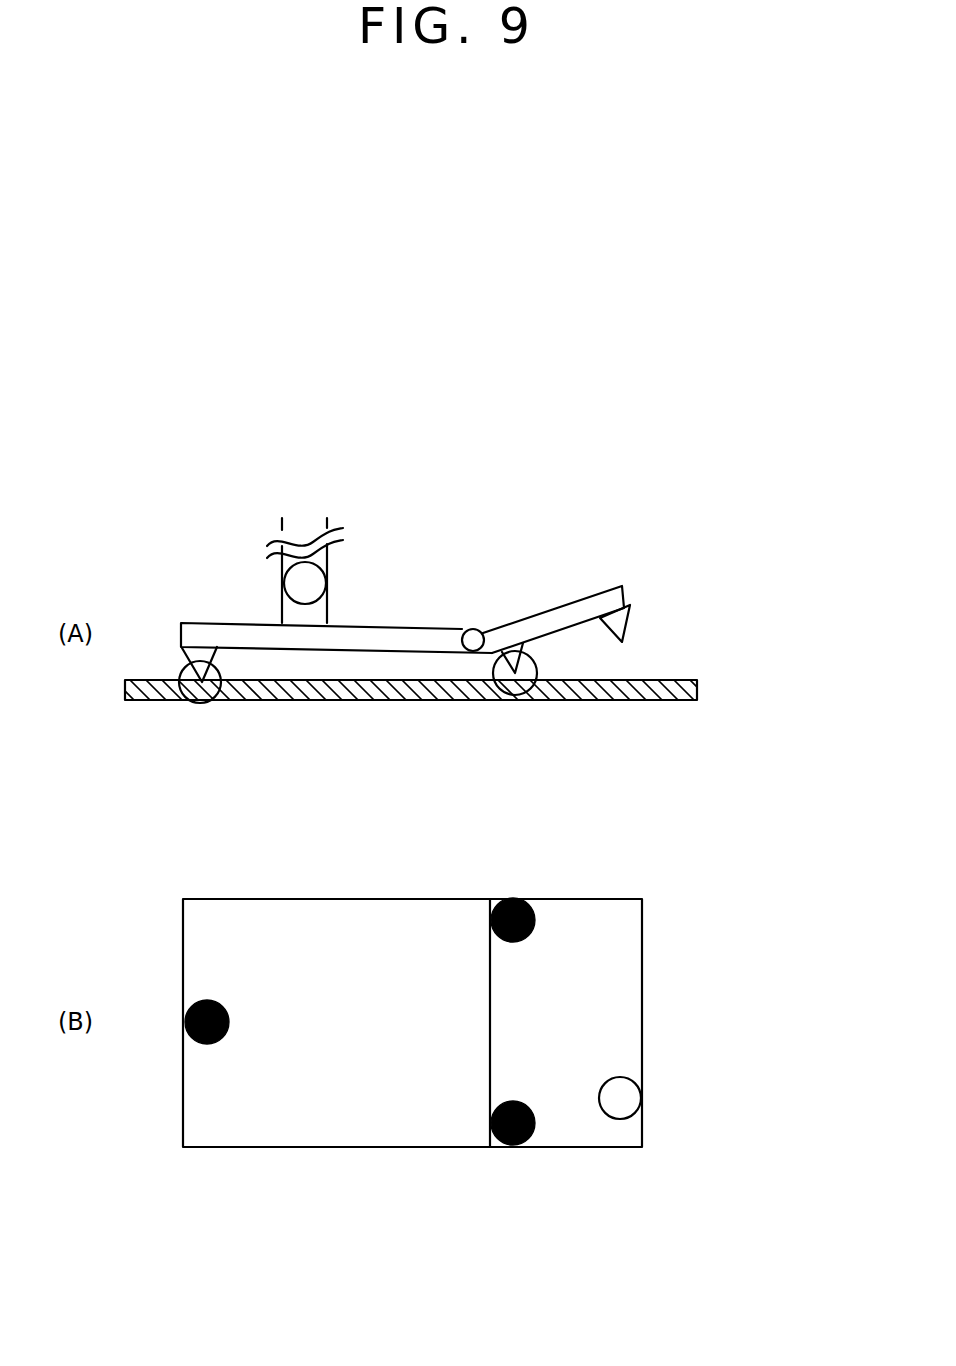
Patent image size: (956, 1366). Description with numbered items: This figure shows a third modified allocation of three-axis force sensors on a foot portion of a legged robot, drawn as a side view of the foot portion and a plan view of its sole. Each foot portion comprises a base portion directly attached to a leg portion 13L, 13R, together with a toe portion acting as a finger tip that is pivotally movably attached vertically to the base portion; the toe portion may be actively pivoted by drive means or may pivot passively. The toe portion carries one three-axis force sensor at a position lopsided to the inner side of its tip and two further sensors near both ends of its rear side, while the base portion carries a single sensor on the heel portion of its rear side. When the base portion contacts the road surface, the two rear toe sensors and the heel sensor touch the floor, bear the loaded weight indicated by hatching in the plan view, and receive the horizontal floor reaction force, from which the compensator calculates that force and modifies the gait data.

The leg portion 13L is at (292, 558).
The leg portion 13R is at (235, 570).